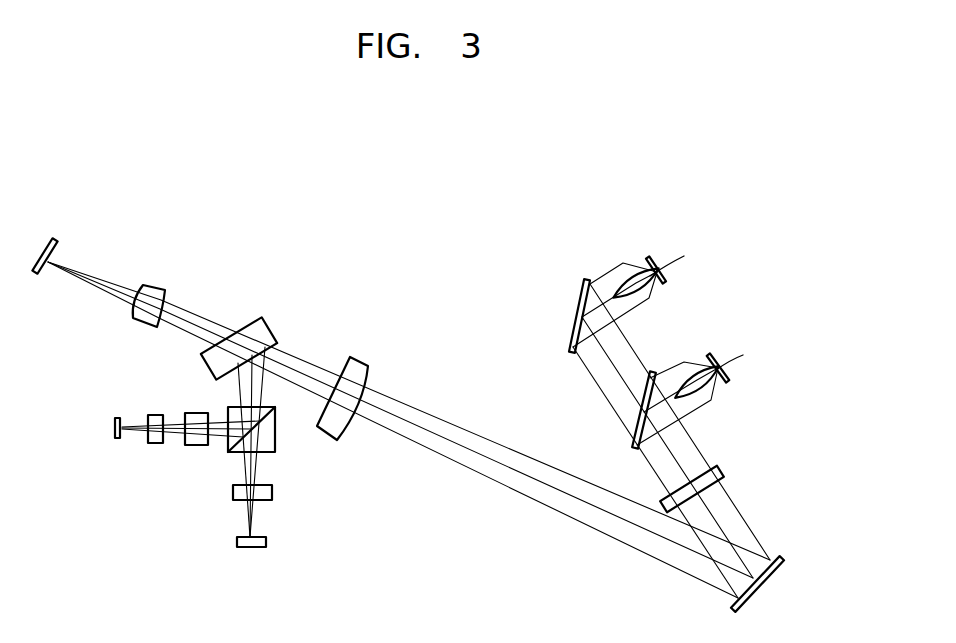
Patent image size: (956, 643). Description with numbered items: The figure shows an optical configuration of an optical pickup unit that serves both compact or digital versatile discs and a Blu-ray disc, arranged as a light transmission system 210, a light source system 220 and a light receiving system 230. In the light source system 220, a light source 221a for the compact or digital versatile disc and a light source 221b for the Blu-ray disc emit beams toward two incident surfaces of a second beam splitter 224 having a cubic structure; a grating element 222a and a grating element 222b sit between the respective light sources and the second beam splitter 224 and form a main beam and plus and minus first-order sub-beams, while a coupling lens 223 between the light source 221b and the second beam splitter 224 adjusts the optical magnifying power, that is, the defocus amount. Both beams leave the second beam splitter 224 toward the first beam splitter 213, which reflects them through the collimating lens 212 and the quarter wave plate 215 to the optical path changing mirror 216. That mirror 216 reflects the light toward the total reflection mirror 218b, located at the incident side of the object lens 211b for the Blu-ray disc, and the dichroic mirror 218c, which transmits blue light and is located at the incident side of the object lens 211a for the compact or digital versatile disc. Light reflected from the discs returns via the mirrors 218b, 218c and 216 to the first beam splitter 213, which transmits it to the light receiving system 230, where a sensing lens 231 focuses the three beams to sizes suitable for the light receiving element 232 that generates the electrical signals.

The light transmission system 210 is at (655, 178).
The object lens corresponding to the CD/DVD 211a is at (713, 403).
The object lens corresponding to a BD 211b is at (623, 261).
The collimating lens 212 is at (362, 364).
The first beam splitter 213 is at (263, 330).
The quarter wave plate 215 is at (724, 469).
The optical path changing mirror 216 is at (781, 556).
The total reflection mirror 218b is at (580, 313).
The dichroic mirror 218c is at (635, 447).
The light source system 220 is at (97, 567).
The light source for a CD/DVD 221a is at (267, 542).
The light source for a BD 221b is at (115, 440).
The grating element for a CD/DVD 222a is at (273, 492).
The grating element for a BD 222b is at (155, 443).
The coupling lens 223 is at (195, 444).
The second beam splitter 224 is at (233, 408).
The light receiving system 230 is at (63, 184).
The sensing lens 231 is at (157, 291).
The light receiving element 232 is at (53, 236).